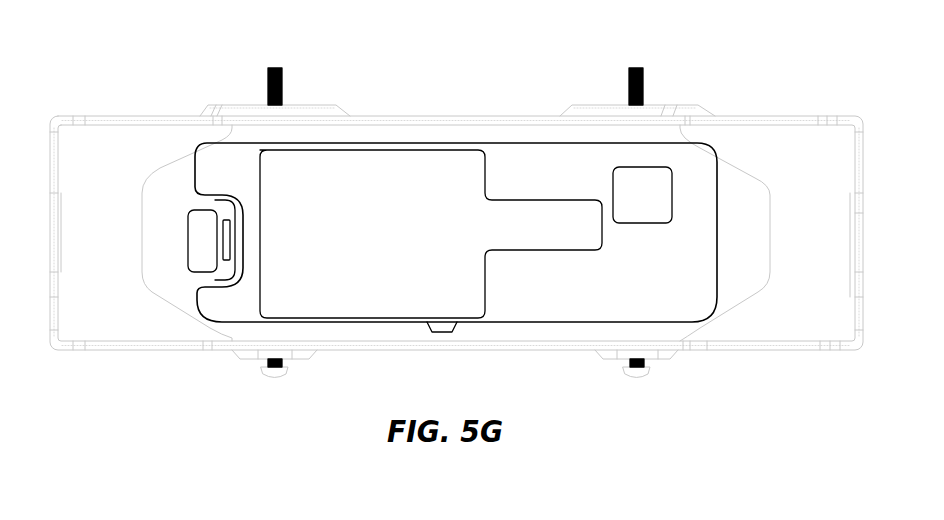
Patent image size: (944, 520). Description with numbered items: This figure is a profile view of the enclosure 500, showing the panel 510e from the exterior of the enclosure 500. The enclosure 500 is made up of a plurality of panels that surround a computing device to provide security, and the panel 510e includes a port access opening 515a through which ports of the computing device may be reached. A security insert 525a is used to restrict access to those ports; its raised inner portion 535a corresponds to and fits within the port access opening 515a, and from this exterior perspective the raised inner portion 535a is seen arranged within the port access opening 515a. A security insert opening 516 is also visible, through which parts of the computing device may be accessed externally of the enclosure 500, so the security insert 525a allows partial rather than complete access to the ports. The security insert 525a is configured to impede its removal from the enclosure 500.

The enclosure 500 is at (780, 82).
The panel 510e is at (770, 201).
The port access opening 515a is at (272, 330).
The security insert opening 516 is at (465, 178).
The security insert 525a is at (638, 300).
The raised inner portion 535a is at (202, 177).